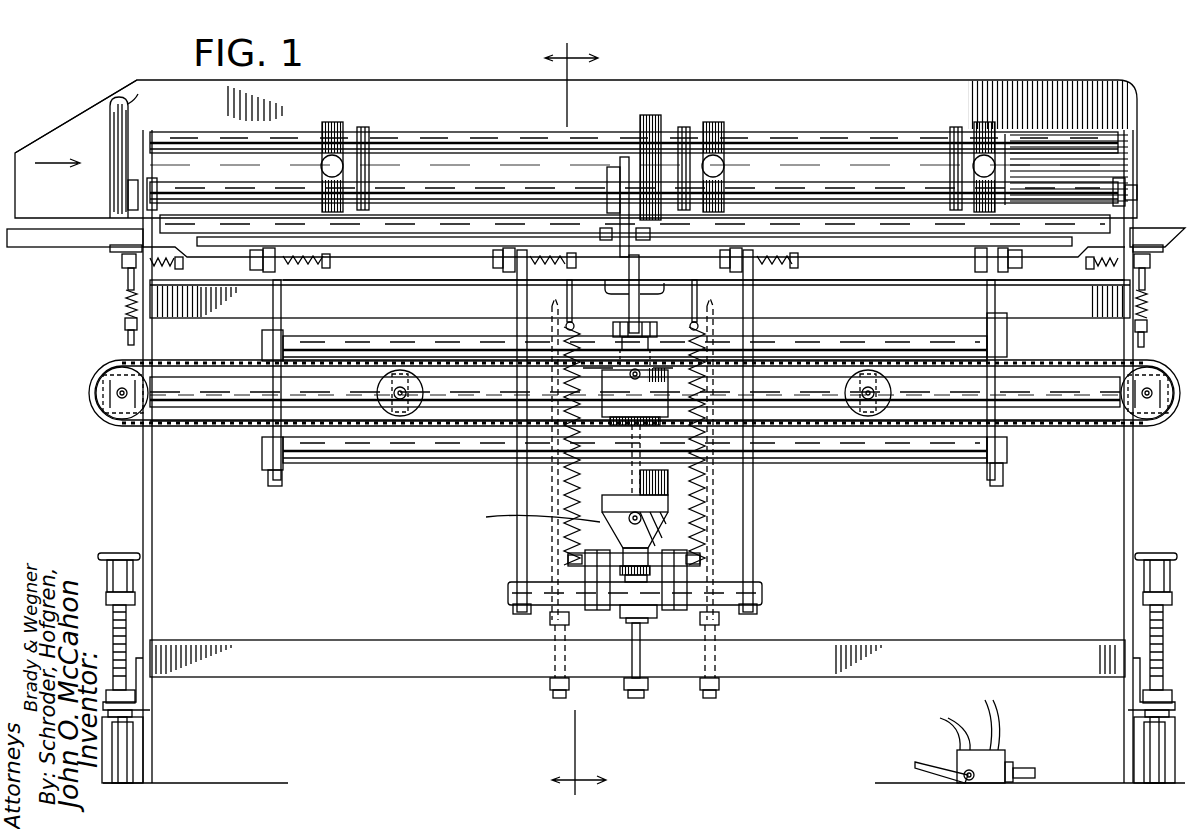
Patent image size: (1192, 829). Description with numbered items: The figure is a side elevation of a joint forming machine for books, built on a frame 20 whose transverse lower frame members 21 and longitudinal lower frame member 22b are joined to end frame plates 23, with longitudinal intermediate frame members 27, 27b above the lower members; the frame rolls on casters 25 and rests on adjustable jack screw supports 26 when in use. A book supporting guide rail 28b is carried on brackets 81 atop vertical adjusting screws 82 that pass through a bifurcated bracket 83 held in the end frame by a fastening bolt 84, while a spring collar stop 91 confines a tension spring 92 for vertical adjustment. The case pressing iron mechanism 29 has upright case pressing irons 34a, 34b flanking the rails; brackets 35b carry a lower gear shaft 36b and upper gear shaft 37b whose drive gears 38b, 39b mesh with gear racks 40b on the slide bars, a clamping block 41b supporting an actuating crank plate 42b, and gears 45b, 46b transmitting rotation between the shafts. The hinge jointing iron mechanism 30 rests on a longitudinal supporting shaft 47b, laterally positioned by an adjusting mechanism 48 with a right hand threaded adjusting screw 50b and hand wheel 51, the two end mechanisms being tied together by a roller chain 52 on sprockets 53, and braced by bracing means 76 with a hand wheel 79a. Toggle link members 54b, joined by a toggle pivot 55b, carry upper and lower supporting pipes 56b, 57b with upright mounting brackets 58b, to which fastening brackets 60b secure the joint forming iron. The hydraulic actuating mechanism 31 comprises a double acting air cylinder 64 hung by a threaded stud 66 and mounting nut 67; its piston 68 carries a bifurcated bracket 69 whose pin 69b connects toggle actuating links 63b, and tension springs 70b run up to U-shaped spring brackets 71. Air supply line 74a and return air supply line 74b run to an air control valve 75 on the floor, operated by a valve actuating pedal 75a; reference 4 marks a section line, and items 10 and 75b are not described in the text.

The section line 4- 4 is at (564, 419).
The article rollers 10 is at (393, 339).
The frame 20 is at (355, 633).
The transverse lower frame members 21 is at (140, 698).
The longitudinal lower frame member 22b is at (935, 640).
The end frame plates 23 is at (153, 503).
The casters 25 is at (133, 778).
The jack screw supports 26 is at (122, 552).
The longitudinal intermediate frame members 27 is at (212, 318).
The longitudinal intermediate frame member 27b is at (870, 296).
The book supporting guide rail 28b is at (58, 248).
The case pressing iron mechanism 29 is at (139, 68).
The hinge jointing iron mechanism 30 is at (256, 282).
The hydraulic actuating mechanism 31 is at (642, 530).
The case pressing iron 34a is at (80, 140).
The case pressing iron 34b is at (123, 144).
The brackets 35b is at (364, 127).
The lower gear shaft 36b is at (486, 180).
The upper gear shaft 37b is at (472, 136).
The drive gears 38b is at (322, 176).
The drive gears 39b is at (328, 122).
The gear racks 40b is at (322, 164).
The clamping block 41b is at (607, 177).
The actuating crank plate 42b is at (620, 160).
The gear 45b is at (648, 226).
The gear 46b is at (648, 115).
The longitudinal supporting shaft 47b is at (246, 408).
The adjusting mechanism 48 is at (113, 351).
The right hand threaded adjusting screw 50b is at (112, 396).
The hand wheel 51 is at (96, 382).
The roller chain 52 is at (196, 428).
The sprockets 53 is at (150, 385).
The toggle link members 54b is at (517, 505).
The toggle pivot 55b is at (762, 594).
The upper supporting pipe 56b is at (262, 340).
The lower supporting pipe 57b is at (262, 462).
The upright mounting brackets 58b is at (276, 486).
The fastening brackets 60b is at (262, 262).
The toggle actuating links 63b is at (598, 625).
The double acting air cylinder 64 is at (612, 485).
The threaded stud 66 is at (640, 290).
The mounting nut 67 is at (612, 280).
The piston 68 is at (618, 553).
The bifurcated bracket 69 is at (584, 566).
The pin 69b is at (687, 565).
The tension springs 70b is at (562, 485).
The U-shaped spring brackets 71 is at (572, 296).
The air supply line 74a is at (1008, 752).
The return air supply line 74b is at (560, 520).
The air control valve 75 is at (957, 765).
The valve actuating pedal 75a is at (915, 770).
The outlet 75b is at (1035, 768).
The bracing means 76 is at (370, 392).
The hand wheel 79a is at (423, 389).
The brackets 81 is at (112, 250).
The vertical adjusting screws 82 is at (128, 279).
The bifurcated bracket 83 is at (122, 260).
The fastening bolt 84 is at (1094, 264).
The spring collar stop 91 is at (126, 300).
The tension spring 92 is at (125, 318).